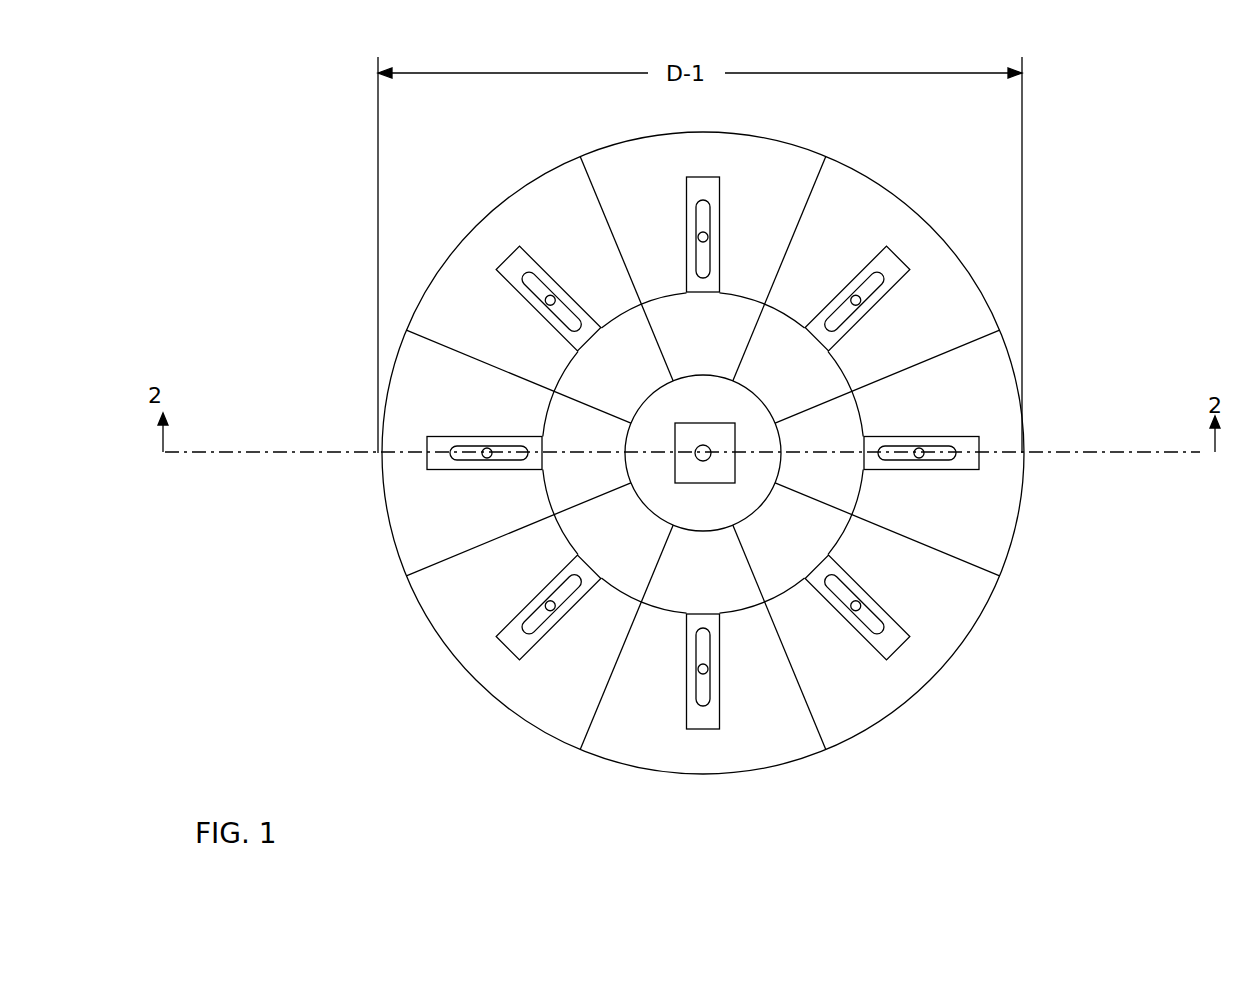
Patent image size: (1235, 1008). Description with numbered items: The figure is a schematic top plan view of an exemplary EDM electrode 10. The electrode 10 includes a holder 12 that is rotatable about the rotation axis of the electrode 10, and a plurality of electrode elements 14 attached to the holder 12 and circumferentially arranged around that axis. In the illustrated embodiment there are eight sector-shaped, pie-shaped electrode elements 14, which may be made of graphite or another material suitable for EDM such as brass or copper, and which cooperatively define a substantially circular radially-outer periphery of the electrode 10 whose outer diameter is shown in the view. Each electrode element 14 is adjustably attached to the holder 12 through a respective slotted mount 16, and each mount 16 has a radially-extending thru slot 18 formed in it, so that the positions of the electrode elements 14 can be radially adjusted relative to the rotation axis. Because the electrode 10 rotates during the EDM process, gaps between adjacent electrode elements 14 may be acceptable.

The EDM electrode 10 is at (266, 187).
The holder 12 is at (521, 490).
The electrode elements 14 is at (581, 198).
The slotted mounts 16 is at (887, 263).
The radially-extending thru slot 18 is at (877, 283).